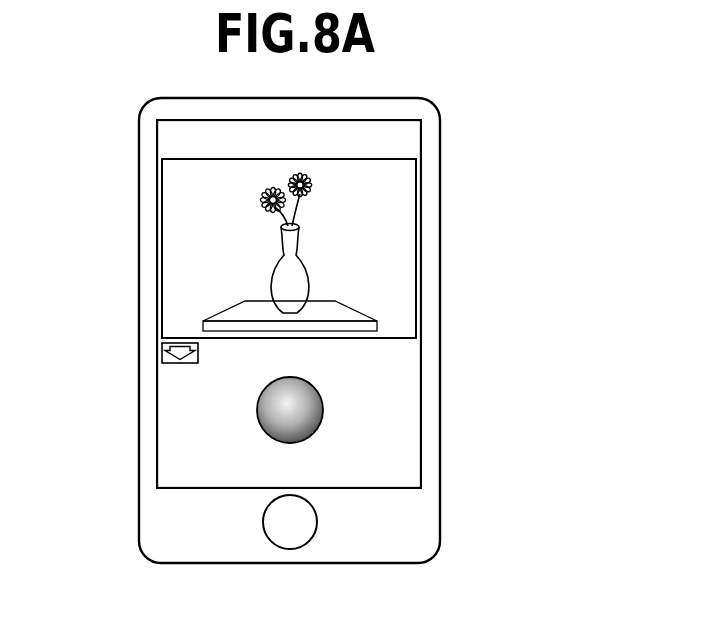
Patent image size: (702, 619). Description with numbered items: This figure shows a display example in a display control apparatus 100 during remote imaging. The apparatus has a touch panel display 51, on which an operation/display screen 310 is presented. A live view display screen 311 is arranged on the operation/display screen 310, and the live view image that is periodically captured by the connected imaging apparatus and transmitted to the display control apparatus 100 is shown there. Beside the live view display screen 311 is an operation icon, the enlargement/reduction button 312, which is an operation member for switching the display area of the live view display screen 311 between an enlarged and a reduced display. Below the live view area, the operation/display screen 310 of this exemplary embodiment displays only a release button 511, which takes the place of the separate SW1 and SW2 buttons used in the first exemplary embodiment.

The display control apparatus 100 is at (441, 206).
The touch panel display 51 is at (404, 139).
The operation/display screen 310 is at (172, 431).
The live view display screen 311 is at (173, 253).
The enlargement/reduction button 312 is at (160, 355).
The release button 511 is at (316, 410).